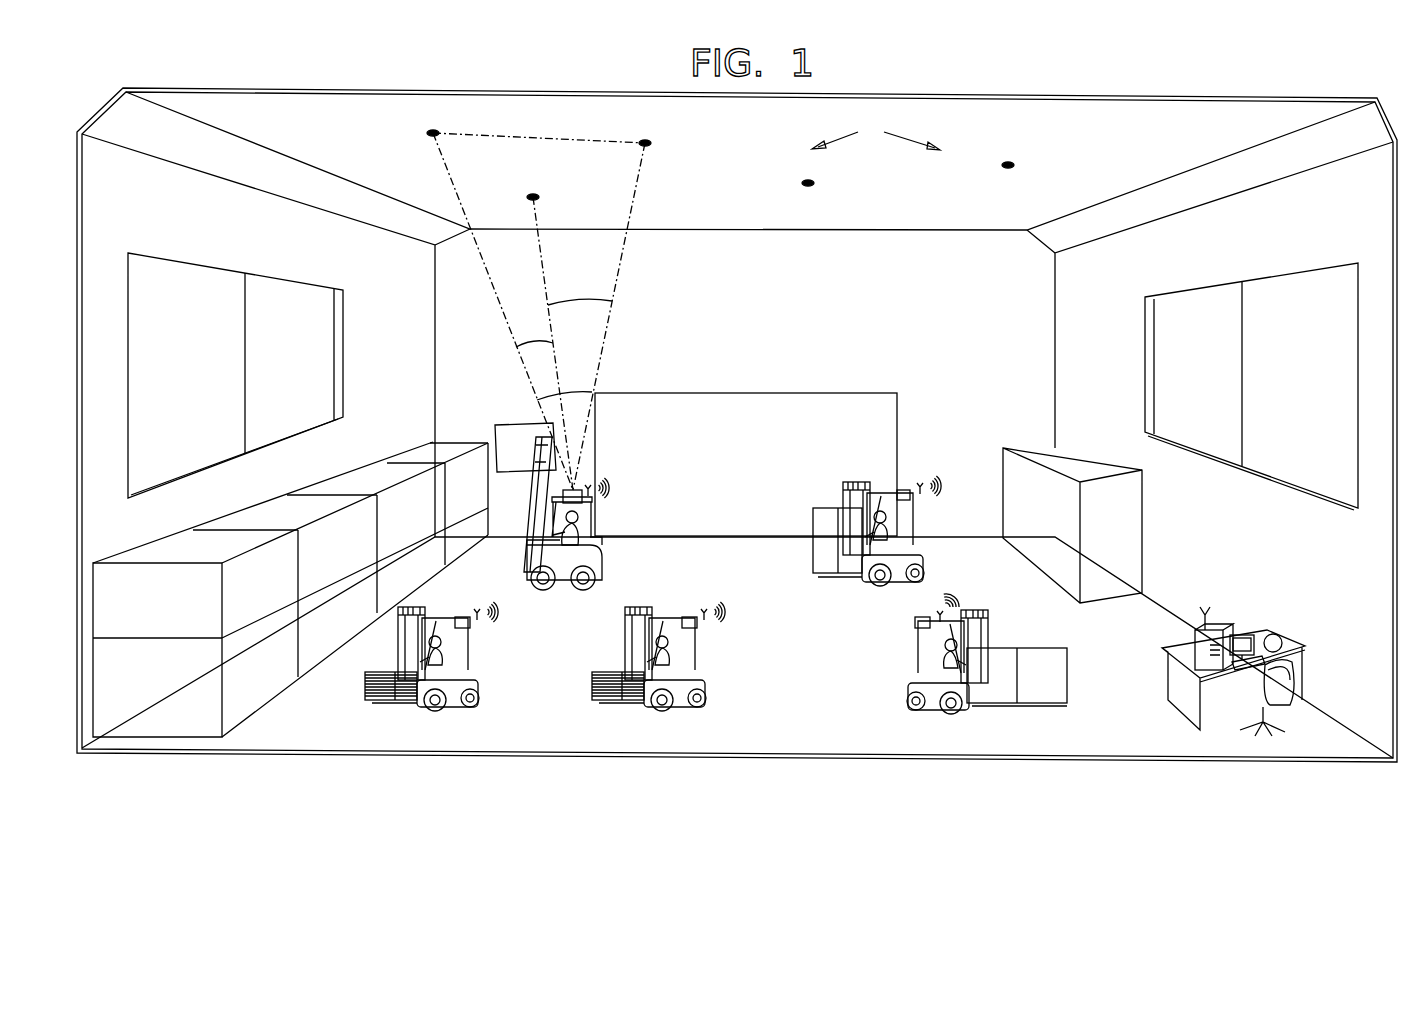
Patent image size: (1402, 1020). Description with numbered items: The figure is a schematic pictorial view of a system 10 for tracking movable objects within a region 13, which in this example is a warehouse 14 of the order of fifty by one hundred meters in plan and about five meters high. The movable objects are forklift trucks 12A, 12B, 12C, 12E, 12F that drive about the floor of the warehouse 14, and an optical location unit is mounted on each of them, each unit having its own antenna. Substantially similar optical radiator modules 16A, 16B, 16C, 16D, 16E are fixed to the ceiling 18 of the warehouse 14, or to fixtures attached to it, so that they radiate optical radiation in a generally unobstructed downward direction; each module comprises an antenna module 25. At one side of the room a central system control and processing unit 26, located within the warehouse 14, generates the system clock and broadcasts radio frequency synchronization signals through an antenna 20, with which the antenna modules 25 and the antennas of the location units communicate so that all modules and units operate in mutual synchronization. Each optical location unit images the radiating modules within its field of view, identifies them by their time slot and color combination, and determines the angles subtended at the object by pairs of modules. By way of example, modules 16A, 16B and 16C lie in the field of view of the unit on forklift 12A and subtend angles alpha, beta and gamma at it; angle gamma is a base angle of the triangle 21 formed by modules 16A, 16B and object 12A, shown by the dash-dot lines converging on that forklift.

The system 10 is at (310, 732).
The movable object 12A is at (538, 565).
The movable object 12B is at (463, 695).
The movable object 12C is at (687, 702).
The movable object 12E is at (921, 568).
The movable object 12F is at (907, 687).
The region 13 is at (340, 443).
The warehouse 14 is at (1192, 515).
The optical radiator module 16A is at (433, 132).
The optical radiator module 16B is at (645, 143).
The optical radiator module 16C is at (533, 197).
The optical radiator module 16D is at (808, 182).
The optical radiator module 16E is at (1008, 164).
The ceiling 18 is at (1040, 112).
The antenna 20 is at (1208, 615).
The triangle 21 is at (505, 309).
The antenna module 25 is at (876, 133).
The central system control and processing unit 26 is at (1193, 630).